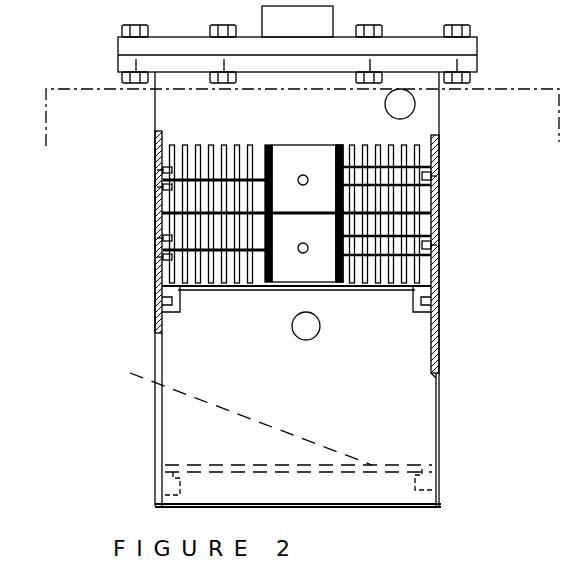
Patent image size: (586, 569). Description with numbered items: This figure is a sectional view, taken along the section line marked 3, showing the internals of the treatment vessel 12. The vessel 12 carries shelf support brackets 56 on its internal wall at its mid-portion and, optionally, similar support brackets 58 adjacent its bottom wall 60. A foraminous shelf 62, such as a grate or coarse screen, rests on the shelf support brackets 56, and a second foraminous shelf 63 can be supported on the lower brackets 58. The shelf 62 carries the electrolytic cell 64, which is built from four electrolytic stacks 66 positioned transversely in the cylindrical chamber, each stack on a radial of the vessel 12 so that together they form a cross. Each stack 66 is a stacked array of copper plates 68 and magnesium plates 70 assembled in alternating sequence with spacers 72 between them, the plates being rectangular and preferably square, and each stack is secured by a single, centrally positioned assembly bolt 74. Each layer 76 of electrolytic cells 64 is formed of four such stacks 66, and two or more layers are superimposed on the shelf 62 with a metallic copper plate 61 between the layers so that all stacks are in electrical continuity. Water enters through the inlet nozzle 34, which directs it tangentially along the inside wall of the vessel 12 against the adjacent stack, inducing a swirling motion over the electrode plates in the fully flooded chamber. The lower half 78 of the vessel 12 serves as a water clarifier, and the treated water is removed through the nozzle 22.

The section line 3- 3 is at (298, 137).
The treatment vessel 12 is at (446, 165).
The nozzle 22 is at (300, 339).
The inlet nozzle 34 is at (412, 107).
The shelf support brackets 56 is at (181, 302).
The support brackets 58 is at (190, 465).
The bottom wall 60 is at (393, 507).
The copper plate 61 is at (178, 212).
The foraminous shelf 62 is at (263, 327).
The second foraminous shelf 63 is at (236, 411).
The electrolytic cell 64 is at (427, 227).
The electrolytic stacks 66 is at (168, 257).
The copper plates 68 is at (344, 272).
The magnesium plates 70 is at (353, 145).
The spacers 72 is at (398, 254).
The assembly bolt 74 is at (433, 182).
The layer 76 is at (176, 150).
The lower half of the vessel 78 is at (400, 356).